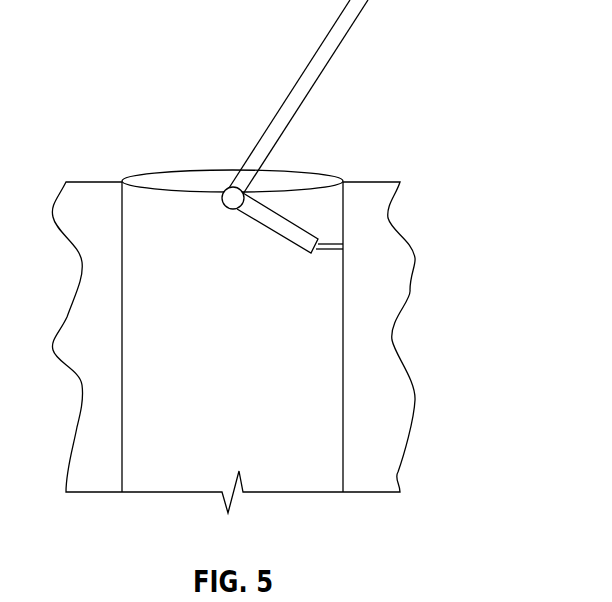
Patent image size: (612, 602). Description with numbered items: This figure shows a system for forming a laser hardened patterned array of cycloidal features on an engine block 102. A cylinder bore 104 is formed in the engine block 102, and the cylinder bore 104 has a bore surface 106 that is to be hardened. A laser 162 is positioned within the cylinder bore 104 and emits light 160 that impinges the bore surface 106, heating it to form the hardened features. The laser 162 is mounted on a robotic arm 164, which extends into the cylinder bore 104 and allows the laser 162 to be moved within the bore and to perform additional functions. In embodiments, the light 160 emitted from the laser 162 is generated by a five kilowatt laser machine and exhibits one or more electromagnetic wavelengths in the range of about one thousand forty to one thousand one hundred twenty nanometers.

The engine block 102 is at (398, 195).
The cylinder bore 104 is at (296, 166).
The bore surface 106 is at (157, 200).
The light 160 is at (327, 253).
The laser 162 is at (275, 237).
The robotic arm 164 is at (318, 50).